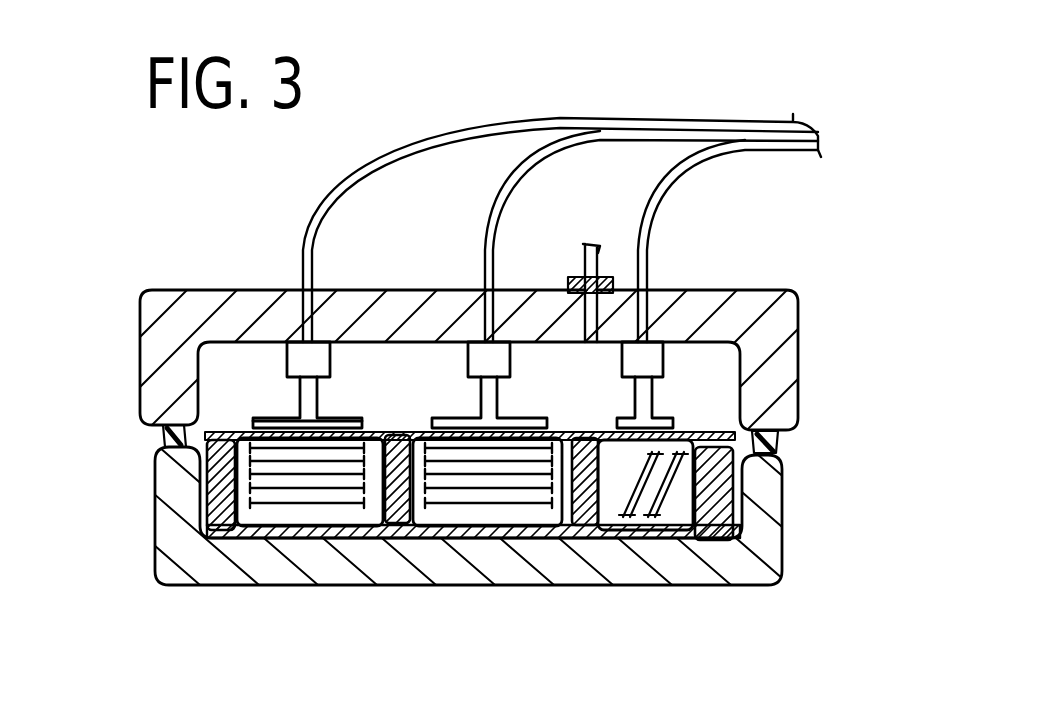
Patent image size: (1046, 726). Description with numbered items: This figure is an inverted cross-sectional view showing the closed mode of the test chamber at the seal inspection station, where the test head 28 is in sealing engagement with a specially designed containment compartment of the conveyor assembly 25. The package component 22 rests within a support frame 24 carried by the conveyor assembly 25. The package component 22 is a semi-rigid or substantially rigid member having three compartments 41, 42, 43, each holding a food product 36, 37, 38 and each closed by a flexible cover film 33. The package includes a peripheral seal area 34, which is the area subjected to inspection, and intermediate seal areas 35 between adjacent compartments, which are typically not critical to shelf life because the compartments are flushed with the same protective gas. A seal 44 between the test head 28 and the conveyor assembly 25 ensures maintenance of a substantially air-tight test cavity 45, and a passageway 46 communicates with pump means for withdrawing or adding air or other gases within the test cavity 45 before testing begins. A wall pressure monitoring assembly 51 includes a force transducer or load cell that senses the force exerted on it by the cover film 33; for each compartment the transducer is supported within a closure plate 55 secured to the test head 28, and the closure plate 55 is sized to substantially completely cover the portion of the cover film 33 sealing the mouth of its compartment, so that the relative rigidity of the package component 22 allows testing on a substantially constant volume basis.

The package component 22 is at (517, 530).
The support frame 24 is at (213, 507).
The conveyor assembly 25 is at (768, 532).
The test head 28 is at (754, 296).
The flexible cover film 33 is at (228, 432).
The peripheral seal area 34 is at (713, 432).
The intermediate seal area 35 is at (407, 430).
The food product 36 is at (312, 495).
The food product 37 is at (453, 497).
The food product 38 is at (660, 497).
The compartment 41 is at (248, 500).
The compartment 42 is at (422, 497).
The compartment 43 is at (627, 470).
The seal 44 is at (161, 437).
The test cavity 45 is at (583, 391).
The passageway 46 is at (585, 258).
The wall pressure monitoring assembly 51 is at (288, 276).
The closure plate 55 is at (282, 427).